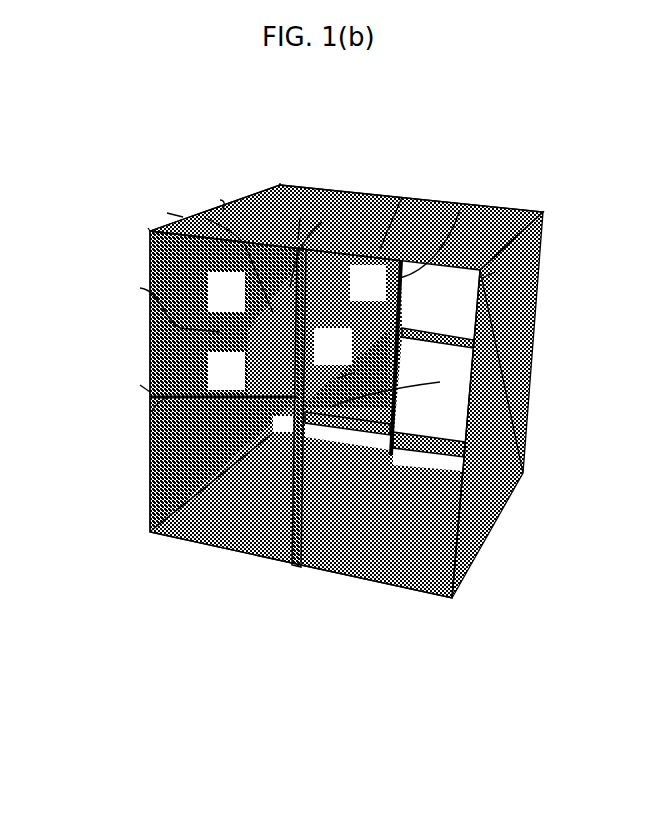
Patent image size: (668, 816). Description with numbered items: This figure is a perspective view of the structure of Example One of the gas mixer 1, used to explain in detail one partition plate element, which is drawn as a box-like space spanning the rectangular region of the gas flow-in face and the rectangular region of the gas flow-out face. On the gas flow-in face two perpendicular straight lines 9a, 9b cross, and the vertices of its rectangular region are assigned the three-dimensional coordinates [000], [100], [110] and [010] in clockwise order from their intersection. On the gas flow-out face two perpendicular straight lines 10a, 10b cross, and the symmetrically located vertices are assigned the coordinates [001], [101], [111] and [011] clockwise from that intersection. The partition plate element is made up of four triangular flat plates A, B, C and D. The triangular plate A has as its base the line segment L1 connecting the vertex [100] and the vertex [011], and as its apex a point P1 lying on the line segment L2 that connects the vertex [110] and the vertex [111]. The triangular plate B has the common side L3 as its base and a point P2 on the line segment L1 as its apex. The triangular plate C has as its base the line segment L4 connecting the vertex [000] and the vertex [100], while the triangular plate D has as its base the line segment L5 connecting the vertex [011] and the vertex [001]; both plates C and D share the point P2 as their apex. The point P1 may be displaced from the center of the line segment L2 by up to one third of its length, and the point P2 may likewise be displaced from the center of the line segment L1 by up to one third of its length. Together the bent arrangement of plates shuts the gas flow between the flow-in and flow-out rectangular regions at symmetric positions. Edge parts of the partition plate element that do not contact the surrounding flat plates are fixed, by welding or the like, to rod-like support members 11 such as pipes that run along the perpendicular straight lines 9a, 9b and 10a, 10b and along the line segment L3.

The crystal (piezoelectric single crystal) 1 is at (393, 99).
The rod-like support member 11 is at (346, 391).
The perpendicular straight line 9a is at (203, 400).
The perpendicular straight line 9b is at (298, 567).
The perpendicular straight line 10a is at (473, 338).
The perpendicular straight line 10b is at (402, 328).
The line segment L1 is at (140, 288).
The line segment L2 is at (183, 217).
The common side L3 is at (355, 372).
The line segment L4 is at (152, 412).
The line segment L5 is at (460, 210).
The point P1 is at (220, 200).
The point P2 is at (300, 218).
The triangular plate A is at (226, 292).
The triangular plate B is at (333, 346).
The triangular plate C is at (226, 371).
The triangular plate D is at (368, 283).
The vertex [110] 110 is at (148, 228).
The vertex [101] 101 is at (205, 218).
The vertex [111] 111 is at (280, 183).
The vertex [010] 010 is at (322, 222).
The vertex [011] 011 is at (402, 197).
The vertex [001] 001 is at (495, 272).
The vertex [100] 100 is at (140, 385).
The vertex [000] 000 is at (440, 382).